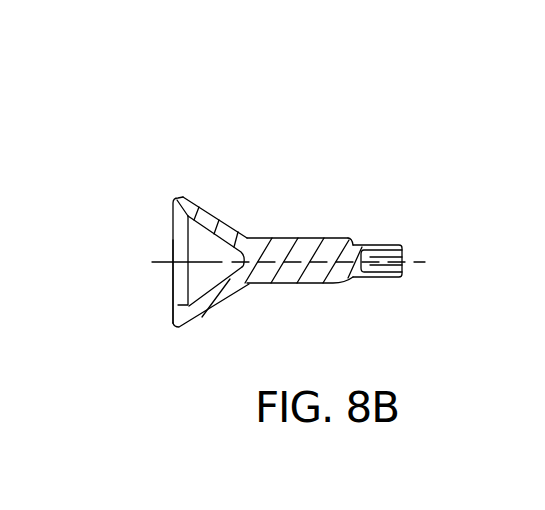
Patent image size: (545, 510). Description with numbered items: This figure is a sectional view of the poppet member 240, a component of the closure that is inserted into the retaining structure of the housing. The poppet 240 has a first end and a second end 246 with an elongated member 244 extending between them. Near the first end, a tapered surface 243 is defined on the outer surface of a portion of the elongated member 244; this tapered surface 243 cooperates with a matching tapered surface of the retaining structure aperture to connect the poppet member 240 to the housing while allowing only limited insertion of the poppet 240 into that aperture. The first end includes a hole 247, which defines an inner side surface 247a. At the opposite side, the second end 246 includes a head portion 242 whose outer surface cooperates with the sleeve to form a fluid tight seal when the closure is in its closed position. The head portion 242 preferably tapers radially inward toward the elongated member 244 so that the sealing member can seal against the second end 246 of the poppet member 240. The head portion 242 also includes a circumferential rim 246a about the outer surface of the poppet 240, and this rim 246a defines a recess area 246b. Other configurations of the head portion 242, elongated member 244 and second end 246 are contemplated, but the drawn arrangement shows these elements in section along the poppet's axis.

The poppet member 240 is at (213, 103).
The head portion 242 is at (188, 205).
The tapered surface 243 is at (342, 238).
The elongated member 244 is at (277, 237).
The second end 246 is at (172, 199).
The circumferential rim 246a is at (180, 325).
The recess area 246b is at (173, 280).
The hole 247 is at (385, 245).
The inner side surface 247a is at (402, 258).